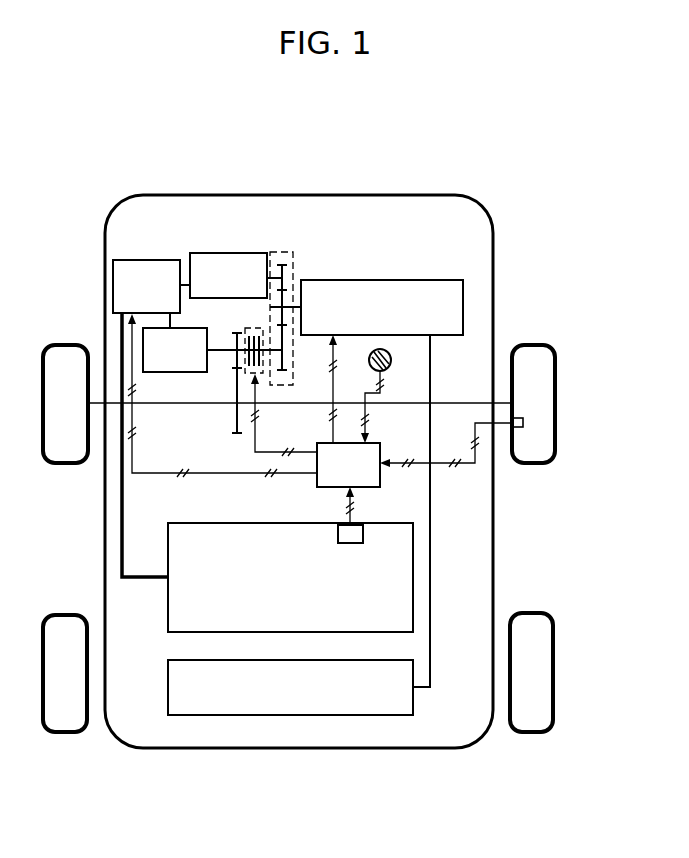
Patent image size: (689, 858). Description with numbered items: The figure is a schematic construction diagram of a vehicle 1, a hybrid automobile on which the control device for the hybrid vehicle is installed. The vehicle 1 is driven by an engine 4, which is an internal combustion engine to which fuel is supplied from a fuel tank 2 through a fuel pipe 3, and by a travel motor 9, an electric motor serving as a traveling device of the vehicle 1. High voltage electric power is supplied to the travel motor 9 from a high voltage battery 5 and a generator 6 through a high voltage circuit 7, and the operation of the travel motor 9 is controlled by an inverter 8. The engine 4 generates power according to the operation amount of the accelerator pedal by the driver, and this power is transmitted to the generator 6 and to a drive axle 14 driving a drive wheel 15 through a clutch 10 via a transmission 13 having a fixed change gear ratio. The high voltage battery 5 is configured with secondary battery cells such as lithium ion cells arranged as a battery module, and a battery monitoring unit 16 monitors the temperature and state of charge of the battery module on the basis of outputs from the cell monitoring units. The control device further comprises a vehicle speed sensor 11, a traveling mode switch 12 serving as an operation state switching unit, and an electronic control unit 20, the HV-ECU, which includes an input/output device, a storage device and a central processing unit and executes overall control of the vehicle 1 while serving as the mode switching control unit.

The vehicle 1 is at (449, 170).
The fuel tank 2 is at (168, 680).
The fuel pipe 3 is at (432, 503).
The engine 4 is at (443, 290).
The high voltage battery 5 is at (168, 610).
The generator 6 is at (208, 262).
The high voltage circuit 7 is at (124, 497).
The inverter 8 is at (137, 262).
The travel motor 9 is at (193, 373).
The clutch 10 is at (263, 375).
The vehicle speed sensor 11 is at (523, 423).
The traveling mode switch 12 is at (387, 371).
The transmission 13 is at (296, 253).
The drive axle 14 is at (462, 403).
The drive wheel 15 is at (63, 352).
The battery monitoring unit 16 is at (350, 543).
The electronic control unit 20 is at (317, 487).